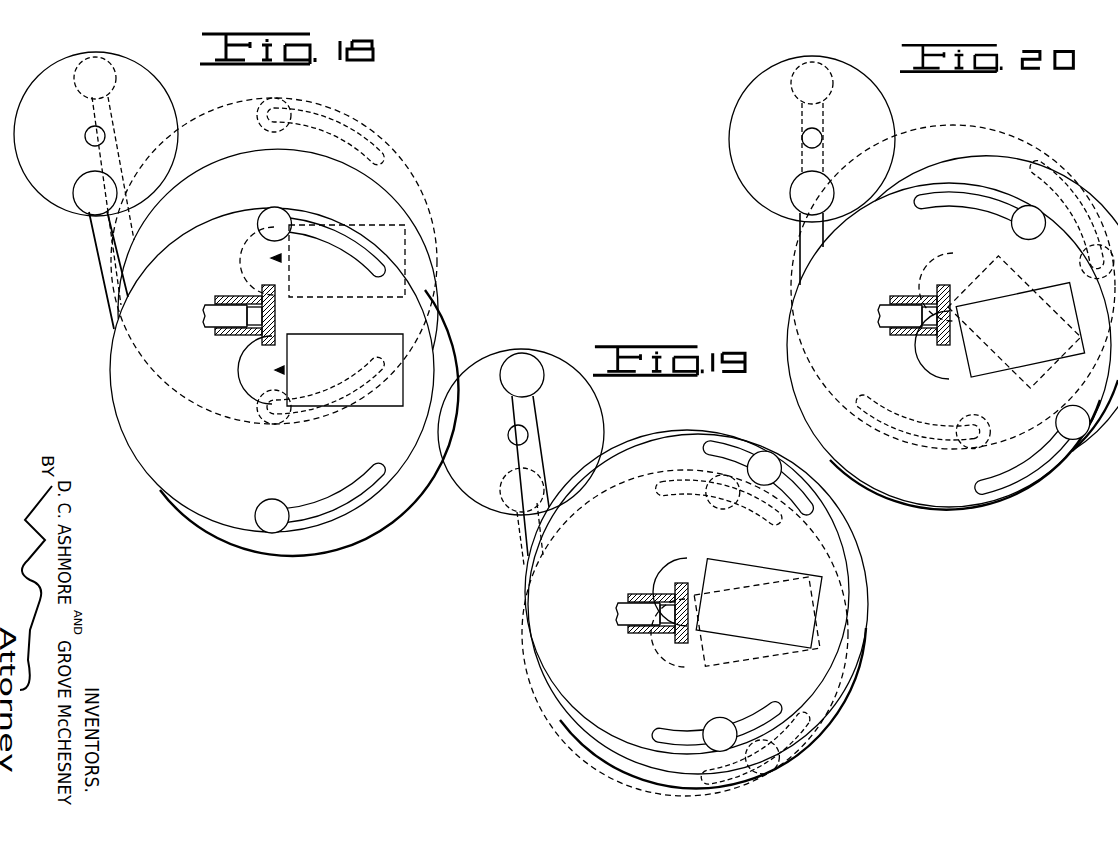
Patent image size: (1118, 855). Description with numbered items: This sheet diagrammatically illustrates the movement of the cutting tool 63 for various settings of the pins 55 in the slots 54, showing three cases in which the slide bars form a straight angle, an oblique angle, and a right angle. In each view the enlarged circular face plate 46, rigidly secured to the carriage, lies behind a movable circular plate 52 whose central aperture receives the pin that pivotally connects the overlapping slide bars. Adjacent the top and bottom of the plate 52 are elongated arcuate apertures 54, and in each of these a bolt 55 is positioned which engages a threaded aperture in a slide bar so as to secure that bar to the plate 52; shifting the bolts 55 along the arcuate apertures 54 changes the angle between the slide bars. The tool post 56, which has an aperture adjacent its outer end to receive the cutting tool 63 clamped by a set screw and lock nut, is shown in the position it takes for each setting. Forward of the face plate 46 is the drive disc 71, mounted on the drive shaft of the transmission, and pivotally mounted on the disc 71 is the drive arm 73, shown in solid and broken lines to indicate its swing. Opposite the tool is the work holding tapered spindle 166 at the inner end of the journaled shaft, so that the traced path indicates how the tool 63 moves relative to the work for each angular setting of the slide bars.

In FIG. 18, the circular face plate 46 is at (230, 165).
In FIG. 19, the circular face plate 46 is at (867, 632).
In FIG. 20, the circular face plate 46 is at (996, 303).
In FIG. 18, the movable circular plate 52 is at (111, 390).
In FIG. 19, the movable circular plate 52 is at (622, 444).
In FIG. 20, the movable circular plate 52 is at (958, 497).
In FIG. 18, the elongated arcuate apertures 54 is at (341, 240).
In FIG. 19, the elongated arcuate apertures 54 is at (727, 452).
In FIG. 20, the elongated arcuate apertures 54 is at (963, 204).
In FIG. 18, the bolt 55 is at (277, 207).
In FIG. 19, the bolt 55 is at (768, 452).
In FIG. 20, the bolt 55 is at (1029, 240).
In FIG. 18, the tool post 56 is at (340, 327).
In FIG. 19, the tool post 56 is at (726, 567).
In FIG. 20, the tool post 56 is at (1040, 290).
In FIG. 18, the cutting tool 63 is at (284, 370).
In FIG. 19, the cutting tool 63 is at (693, 594).
In FIG. 20, the cutting tool 63 is at (952, 345).
In FIG. 18, the drive disc 71 is at (42, 80).
In FIG. 19, the drive disc 71 is at (496, 364).
In FIG. 20, the drive disc 71 is at (734, 113).
In FIG. 18, the drive arm 73 is at (93, 239).
In FIG. 19, the drive arm 73 is at (536, 418).
In FIG. 20, the drive arm 73 is at (801, 237).
In FIG. 18, the work holding tapered spindle 166 is at (205, 313).
In FIG. 19, the work holding tapered spindle 166 is at (620, 614).
In FIG. 20, the work holding tapered spindle 166 is at (890, 318).